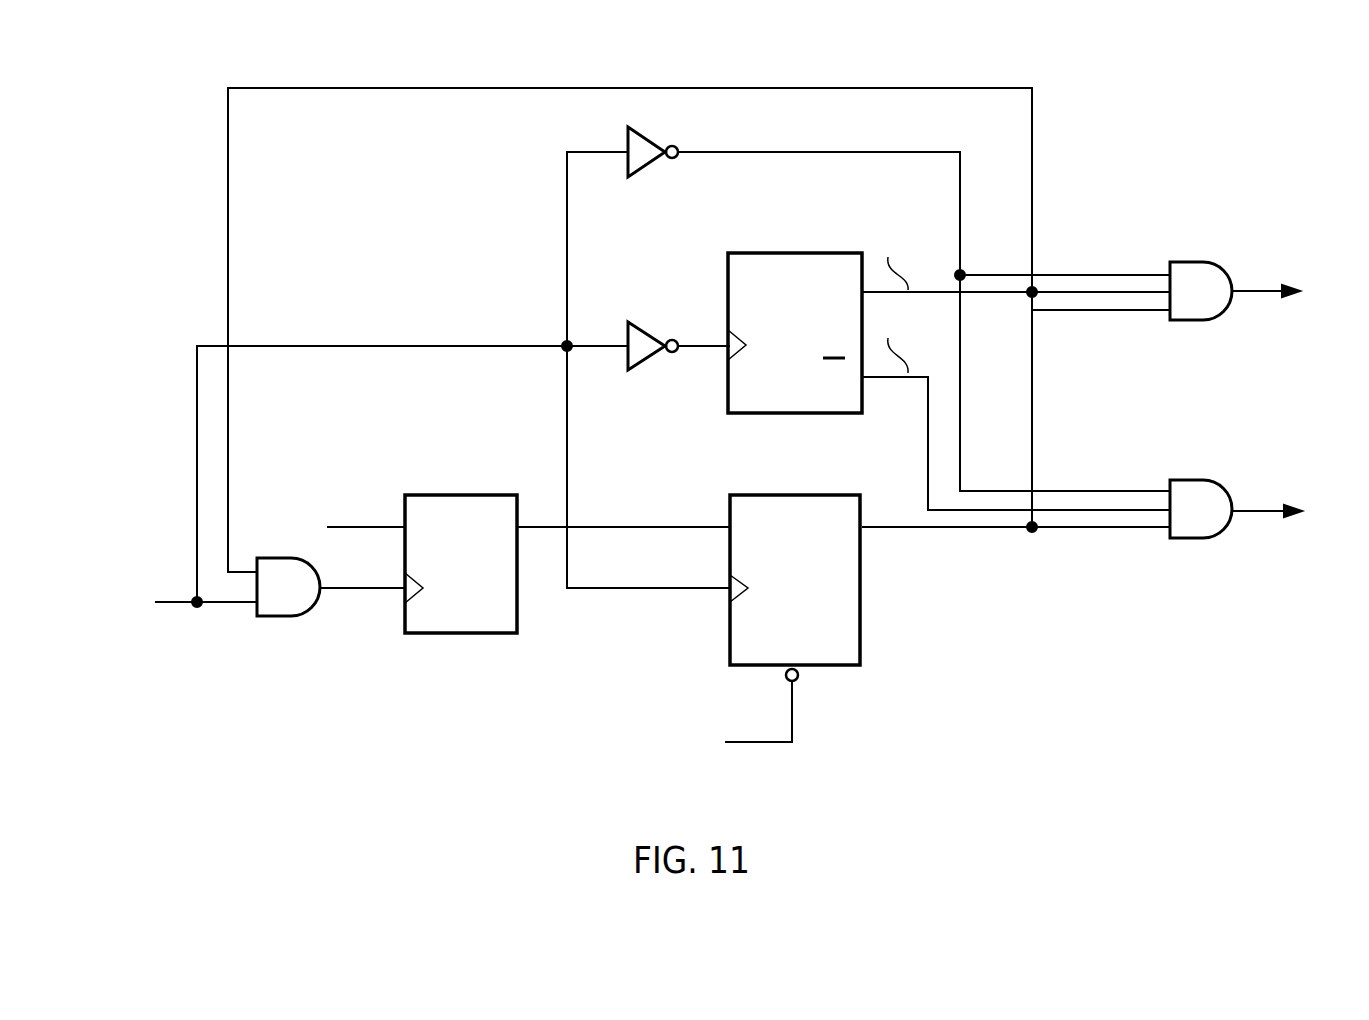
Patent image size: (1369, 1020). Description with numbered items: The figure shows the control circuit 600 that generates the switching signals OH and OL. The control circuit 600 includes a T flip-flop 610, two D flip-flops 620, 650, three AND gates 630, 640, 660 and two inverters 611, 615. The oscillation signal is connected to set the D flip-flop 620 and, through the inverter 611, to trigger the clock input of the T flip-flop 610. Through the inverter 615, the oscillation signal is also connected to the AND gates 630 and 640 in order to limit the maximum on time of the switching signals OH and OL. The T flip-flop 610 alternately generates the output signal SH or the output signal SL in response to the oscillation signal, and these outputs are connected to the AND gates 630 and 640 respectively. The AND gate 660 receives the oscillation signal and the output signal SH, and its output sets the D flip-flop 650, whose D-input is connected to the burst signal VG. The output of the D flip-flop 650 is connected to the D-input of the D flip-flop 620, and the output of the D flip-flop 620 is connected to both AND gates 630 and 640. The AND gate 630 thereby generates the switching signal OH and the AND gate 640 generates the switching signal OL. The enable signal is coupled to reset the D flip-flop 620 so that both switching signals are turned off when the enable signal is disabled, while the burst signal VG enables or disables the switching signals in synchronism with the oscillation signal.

The control circuit 600 is at (1342, 93).
The T flip-flop 610 is at (772, 253).
The inverter 611 is at (647, 363).
The inverter 615 is at (647, 172).
The D flip-flop 620 is at (825, 665).
The AND gate 630 is at (1195, 260).
The AND gate 640 is at (1198, 477).
The D flip-flop 650 is at (453, 495).
The AND gate 660 is at (278, 617).